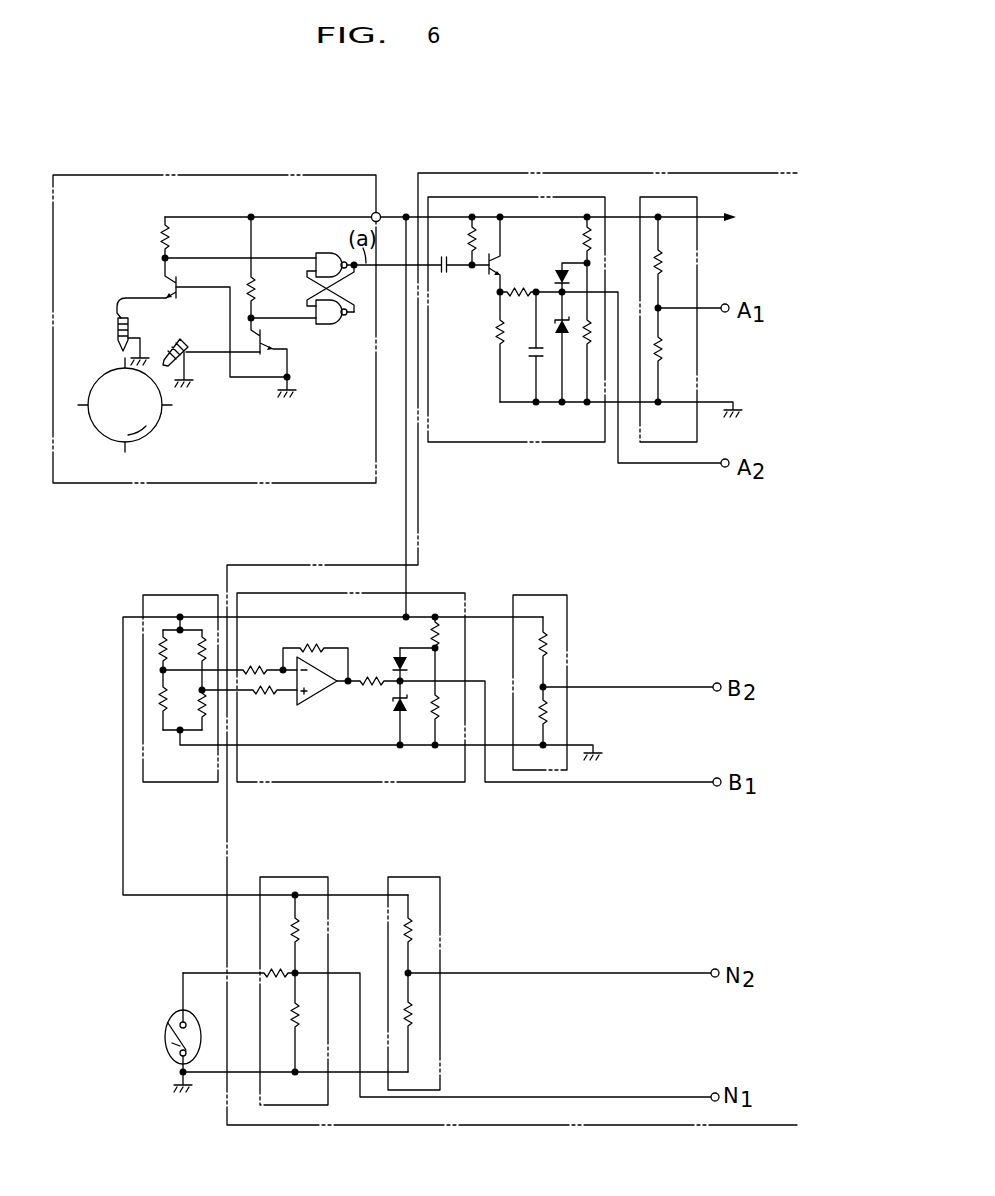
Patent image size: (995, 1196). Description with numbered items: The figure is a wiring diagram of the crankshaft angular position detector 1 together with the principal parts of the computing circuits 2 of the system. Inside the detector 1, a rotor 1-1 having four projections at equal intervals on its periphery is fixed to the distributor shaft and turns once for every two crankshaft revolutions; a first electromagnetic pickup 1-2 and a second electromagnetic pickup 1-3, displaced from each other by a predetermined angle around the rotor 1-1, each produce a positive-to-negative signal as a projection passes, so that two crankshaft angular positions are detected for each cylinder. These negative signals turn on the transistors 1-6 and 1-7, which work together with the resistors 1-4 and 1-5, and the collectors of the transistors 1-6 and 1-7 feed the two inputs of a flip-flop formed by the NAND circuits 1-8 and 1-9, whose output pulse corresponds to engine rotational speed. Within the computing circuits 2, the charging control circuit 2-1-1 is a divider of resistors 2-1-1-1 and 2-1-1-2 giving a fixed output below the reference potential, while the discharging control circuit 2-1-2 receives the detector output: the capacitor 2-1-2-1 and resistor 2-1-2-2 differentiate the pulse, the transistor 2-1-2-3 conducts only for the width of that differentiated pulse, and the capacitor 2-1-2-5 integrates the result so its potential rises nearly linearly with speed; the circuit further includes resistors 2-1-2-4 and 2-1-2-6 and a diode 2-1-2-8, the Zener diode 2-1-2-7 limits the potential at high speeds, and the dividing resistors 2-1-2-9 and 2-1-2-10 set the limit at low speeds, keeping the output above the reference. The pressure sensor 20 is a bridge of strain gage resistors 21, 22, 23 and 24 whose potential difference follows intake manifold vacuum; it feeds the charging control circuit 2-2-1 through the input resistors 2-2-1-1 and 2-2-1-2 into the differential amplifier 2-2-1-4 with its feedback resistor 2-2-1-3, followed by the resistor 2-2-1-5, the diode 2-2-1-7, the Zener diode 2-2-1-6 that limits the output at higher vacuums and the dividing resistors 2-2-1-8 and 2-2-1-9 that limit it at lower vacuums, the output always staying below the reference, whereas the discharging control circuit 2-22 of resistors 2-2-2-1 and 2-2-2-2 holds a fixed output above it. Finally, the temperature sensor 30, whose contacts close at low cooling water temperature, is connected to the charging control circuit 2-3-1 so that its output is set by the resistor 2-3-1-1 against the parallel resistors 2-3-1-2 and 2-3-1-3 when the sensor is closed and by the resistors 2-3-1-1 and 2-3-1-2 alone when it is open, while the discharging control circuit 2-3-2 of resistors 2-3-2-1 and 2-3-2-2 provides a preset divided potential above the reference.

The crankshaft angular position detector 1 is at (213, 486).
The rotor 1-1 is at (148, 428).
The first electromagnetic pickup 1-2 is at (118, 326).
The second electromagnetic pickup 1-3 is at (190, 354).
The resistor 1-4 is at (163, 236).
The resistor 1-5 is at (257, 289).
The transistor 1-6 is at (170, 282).
The transistor 1-7 is at (250, 340).
The NAND circuit 1-8 is at (321, 254).
The NAND circuit 1-9 is at (323, 325).
The computing circuits 2 is at (617, 173).
The charging control circuit 2-1-1 is at (642, 442).
The resistor 2-1-1-1 is at (663, 263).
The resistor 2-1-1-2 is at (663, 348).
The discharging control circuit 2-1-2 is at (450, 442).
The capacitor 2-1-2-1 is at (444, 274).
The resistor 2-1-2-2 is at (467, 238).
The transistor 2-1-2-3 is at (493, 264).
The resistor 2-1-2-4 is at (496, 340).
The capacitor 2-1-2-5 is at (528, 352).
The resistor 2-1-2-6 is at (518, 288).
The Zener diode 2-1-2-7 is at (560, 336).
The diode 2-1-2-8 is at (570, 276).
The dividing resistor 2-1-2-9 is at (588, 226).
The dividing resistor 2-1-2-10 is at (598, 320).
The pressure sensor 20 is at (157, 782).
The strain gage resistor 21 is at (158, 650).
The strain gage resistor 22 is at (158, 700).
The strain gage resistor 23 is at (198, 652).
The strain gage resistor 24 is at (198, 702).
The charging control circuit 2-2-1 is at (322, 782).
The input resistor 2-2-1-1 is at (253, 666).
The input resistor 2-2-1-2 is at (263, 694).
The feedback resistor 2-2-1-3 is at (310, 645).
The differential amplifier 2-2-1-4 is at (333, 692).
The resistor 2-2-1-5 is at (366, 677).
The Zener diode 2-2-1-6 is at (397, 712).
The diode 2-2-1-7 is at (397, 658).
The dividing resistor 2-2-1-8 is at (438, 637).
The dividing resistor 2-2-1-9 is at (435, 721).
The discharging control circuit 2-22 is at (517, 770).
The resistor 2-2-2-1 is at (550, 641).
The resistor 2-2-2-2 is at (550, 716).
The temperature sensor 30 is at (165, 1037).
The charging control circuit 2-3-1 is at (290, 1105).
The resistor 2-3-1-1 is at (300, 930).
The resistor 2-3-1-2 is at (300, 1015).
The resistor 2-3-1-3 is at (272, 976).
The discharging control circuit 2-3-2 is at (440, 1063).
The resistor 2-3-2-1 is at (413, 930).
The resistor 2-3-2-2 is at (413, 1012).